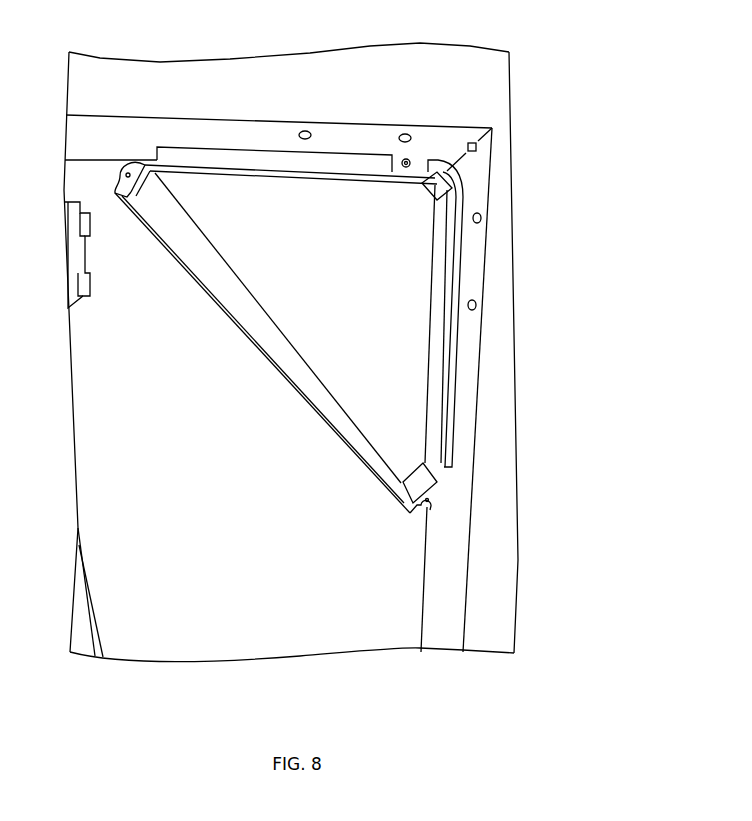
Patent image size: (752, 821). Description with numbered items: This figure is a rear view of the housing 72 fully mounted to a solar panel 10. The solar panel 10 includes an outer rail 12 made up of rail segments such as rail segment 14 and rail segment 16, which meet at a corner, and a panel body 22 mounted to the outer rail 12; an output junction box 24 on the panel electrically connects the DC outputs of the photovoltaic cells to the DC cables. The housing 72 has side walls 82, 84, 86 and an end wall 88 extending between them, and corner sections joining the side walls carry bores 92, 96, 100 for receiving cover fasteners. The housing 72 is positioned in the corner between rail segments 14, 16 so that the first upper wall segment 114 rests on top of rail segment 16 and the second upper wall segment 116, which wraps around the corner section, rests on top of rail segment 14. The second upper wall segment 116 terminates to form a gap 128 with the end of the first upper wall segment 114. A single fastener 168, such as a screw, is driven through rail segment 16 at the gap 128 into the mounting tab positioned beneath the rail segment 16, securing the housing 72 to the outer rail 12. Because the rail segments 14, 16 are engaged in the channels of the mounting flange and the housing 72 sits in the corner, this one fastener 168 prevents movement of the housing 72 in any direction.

The solar panel 10 is at (603, 93).
The outer rail 12 is at (477, 612).
The rail segment 14 is at (465, 497).
The rail segment 16 is at (74, 136).
The panel body 22 is at (246, 516).
The output junction box 24 is at (68, 218).
The housing 72 is at (438, 300).
The side wall 82 is at (455, 410).
The side wall 84 is at (353, 172).
The side wall 86 is at (267, 360).
The end wall 88 is at (345, 301).
The bore 92 is at (452, 184).
The bore 96 is at (122, 197).
The bore 100 is at (421, 506).
The first upper wall segment 114 is at (300, 157).
The second upper wall segment 116 is at (452, 392).
The gap 128 is at (417, 158).
The fastener 168 is at (402, 159).